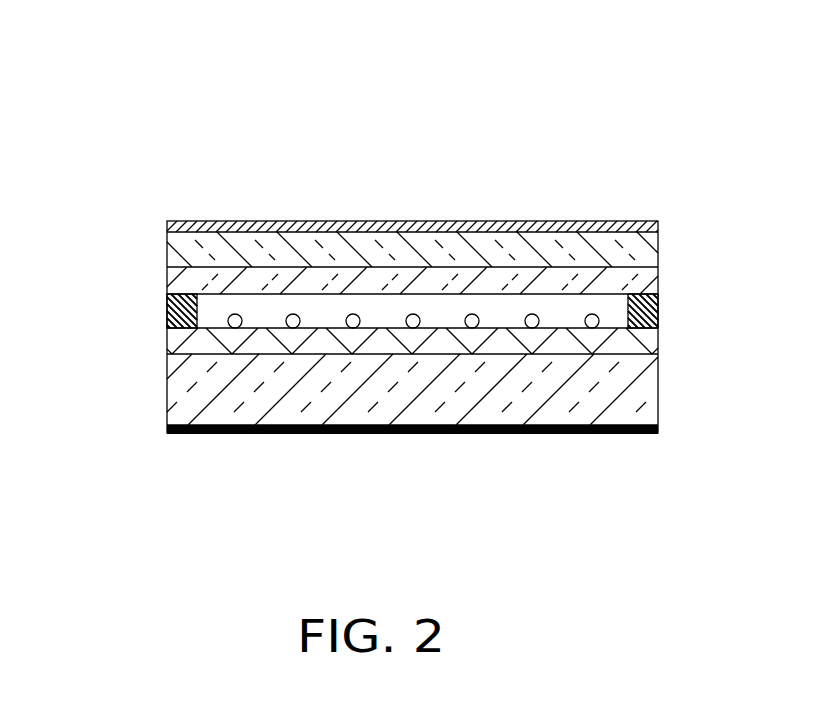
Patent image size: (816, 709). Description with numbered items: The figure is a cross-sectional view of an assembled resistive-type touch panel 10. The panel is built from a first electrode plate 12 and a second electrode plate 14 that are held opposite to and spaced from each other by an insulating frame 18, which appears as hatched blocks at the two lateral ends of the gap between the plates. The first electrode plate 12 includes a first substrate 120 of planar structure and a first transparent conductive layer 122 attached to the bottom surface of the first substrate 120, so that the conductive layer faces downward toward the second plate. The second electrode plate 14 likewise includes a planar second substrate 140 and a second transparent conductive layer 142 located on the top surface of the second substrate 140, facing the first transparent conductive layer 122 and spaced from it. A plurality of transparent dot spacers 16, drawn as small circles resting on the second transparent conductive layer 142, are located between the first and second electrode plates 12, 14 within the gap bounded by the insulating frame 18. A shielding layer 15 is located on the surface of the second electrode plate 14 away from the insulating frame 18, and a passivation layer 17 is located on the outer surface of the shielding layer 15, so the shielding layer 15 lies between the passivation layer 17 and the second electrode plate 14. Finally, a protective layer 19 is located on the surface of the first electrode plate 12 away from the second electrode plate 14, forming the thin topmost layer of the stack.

The resistive-type touch panel 10 is at (399, 62).
The first electrode plate 12 is at (72, 234).
The first substrate 120 is at (167, 244).
The first transparent conductive layer 122 is at (167, 268).
The second electrode plate 14 is at (70, 325).
The second substrate 140 is at (184, 396).
The second transparent conductive layer 142 is at (167, 334).
The shielding layer 15 is at (167, 433).
The transparent dot spacers 16 is at (228, 320).
The passivation layer 17 is at (197, 436).
The insulating frame 18 is at (660, 294).
The protective layer 19 is at (198, 221).